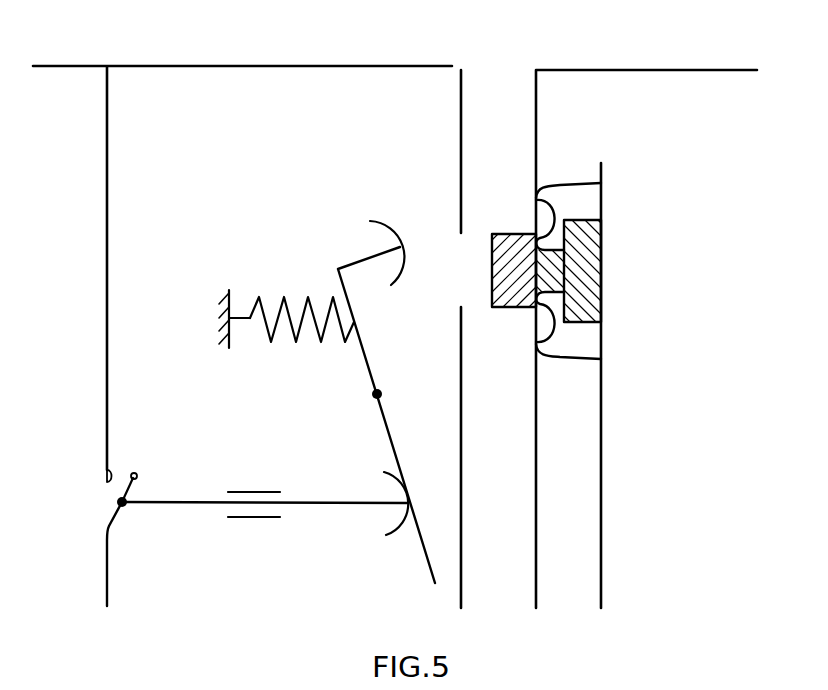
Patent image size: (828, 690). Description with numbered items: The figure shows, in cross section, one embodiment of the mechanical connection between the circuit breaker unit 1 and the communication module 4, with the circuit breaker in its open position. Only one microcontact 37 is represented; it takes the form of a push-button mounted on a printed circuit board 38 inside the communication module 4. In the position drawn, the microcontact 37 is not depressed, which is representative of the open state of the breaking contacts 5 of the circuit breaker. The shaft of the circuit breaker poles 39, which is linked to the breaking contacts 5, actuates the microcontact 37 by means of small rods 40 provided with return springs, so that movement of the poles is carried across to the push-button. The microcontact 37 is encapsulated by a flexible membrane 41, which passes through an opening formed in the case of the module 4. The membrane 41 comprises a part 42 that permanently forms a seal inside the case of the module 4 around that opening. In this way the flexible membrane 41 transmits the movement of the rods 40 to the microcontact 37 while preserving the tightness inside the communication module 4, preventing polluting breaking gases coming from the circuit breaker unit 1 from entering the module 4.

The circuit breaker unit 1 is at (168, 66).
The communication module 4 is at (675, 70).
The breaking contacts 5 is at (110, 527).
The microcontact 37 is at (665, 251).
The printed circuit board 38 is at (680, 571).
The shaft of the circuit breaker poles 39 is at (122, 502).
The small rods 40 is at (340, 434).
The flexible membrane 41 is at (523, 243).
The seal part of the flexible membrane 42 is at (568, 185).